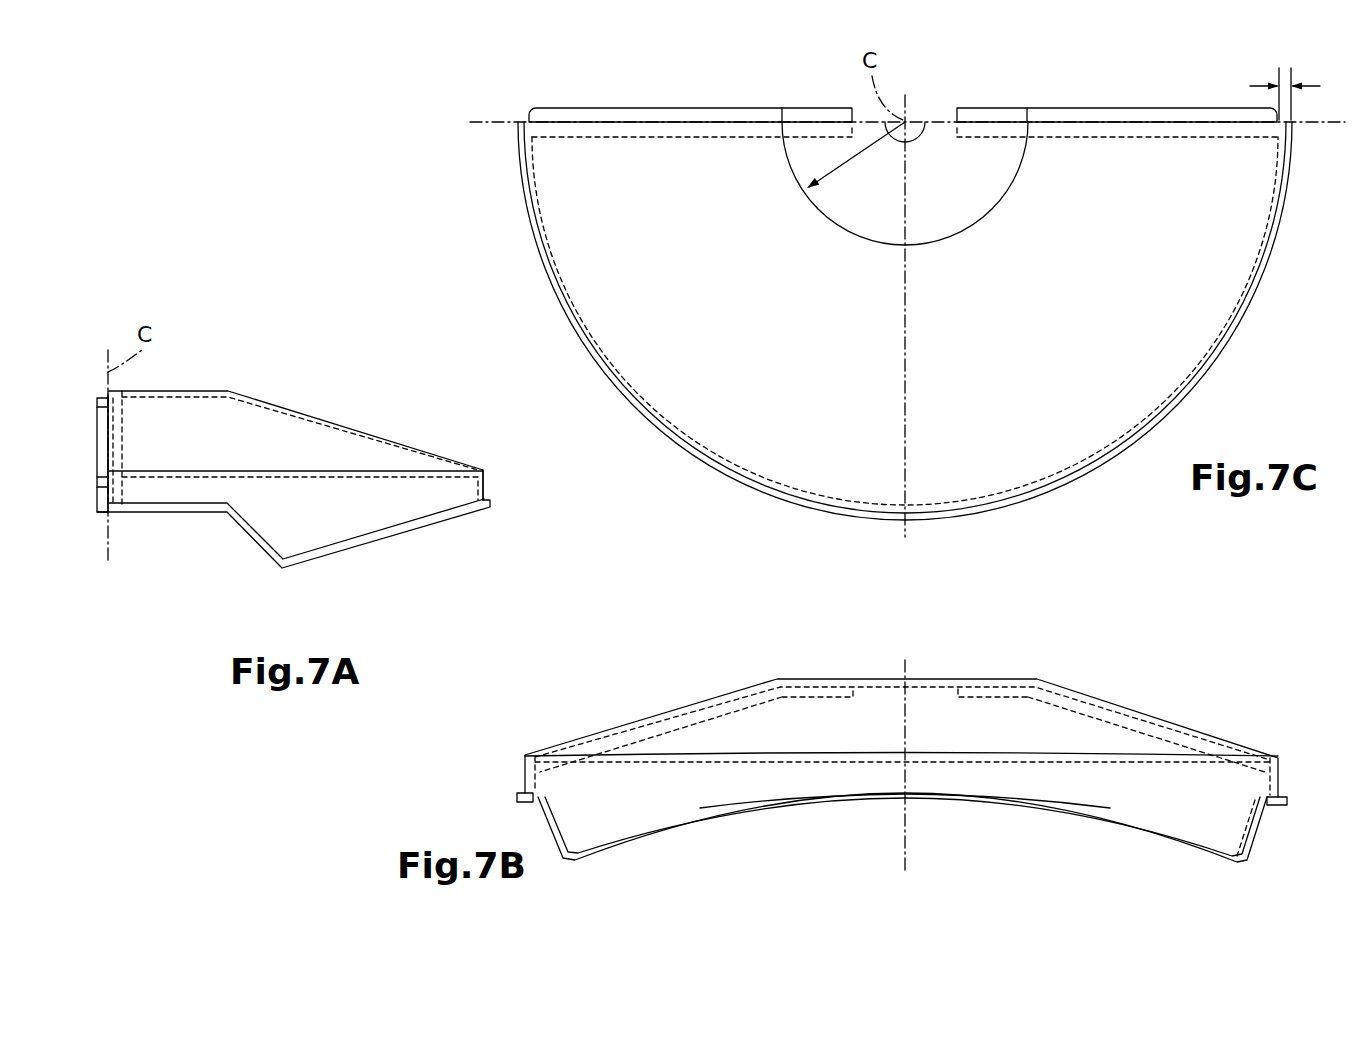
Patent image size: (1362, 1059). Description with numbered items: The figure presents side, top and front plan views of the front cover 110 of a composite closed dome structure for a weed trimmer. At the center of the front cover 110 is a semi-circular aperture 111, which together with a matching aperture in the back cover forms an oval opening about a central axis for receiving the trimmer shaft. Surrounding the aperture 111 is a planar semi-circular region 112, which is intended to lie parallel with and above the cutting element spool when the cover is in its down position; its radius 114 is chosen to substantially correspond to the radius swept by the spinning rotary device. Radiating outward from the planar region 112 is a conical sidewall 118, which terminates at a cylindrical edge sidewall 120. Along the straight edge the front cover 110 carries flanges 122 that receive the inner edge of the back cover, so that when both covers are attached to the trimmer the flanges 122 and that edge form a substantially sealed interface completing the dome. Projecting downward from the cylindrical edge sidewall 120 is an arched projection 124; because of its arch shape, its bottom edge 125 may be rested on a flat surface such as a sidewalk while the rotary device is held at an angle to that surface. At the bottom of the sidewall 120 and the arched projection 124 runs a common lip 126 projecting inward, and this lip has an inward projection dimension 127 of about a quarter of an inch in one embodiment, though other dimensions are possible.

In FIG. 7C, the front cover 110 is at (913, 284).
In FIG. 7C, the semi-circular aperture 111 is at (915, 128).
In FIG. 7C, the planar semi-circular region 112 is at (953, 160).
In FIG. 7A, the planar semi-circular region 112 is at (187, 388).
In FIG. 7C, the radius 114 is at (842, 158).
In FIG. 7C, the conical sidewall 118 is at (577, 196).
In FIG. 7A, the conical sidewall 118 is at (328, 420).
In FIG. 7B, the conical sidewall 118 is at (655, 716).
In FIG. 7A, the cylindrical edge sidewall 120 is at (486, 490).
In FIG. 7B, the cylindrical edge sidewall 120 is at (523, 772).
In FIG. 7C, the flange 122 is at (621, 108).
In FIG. 7A, the arched projection 124 is at (310, 525).
In FIG. 7B, the arched projection 124 is at (590, 812).
In FIG. 7B, the bottom edge 125 is at (767, 810).
In FIG. 7C, the lip 126 is at (1287, 175).
In FIG. 7C, the inward projection dimension 127 is at (1290, 74).